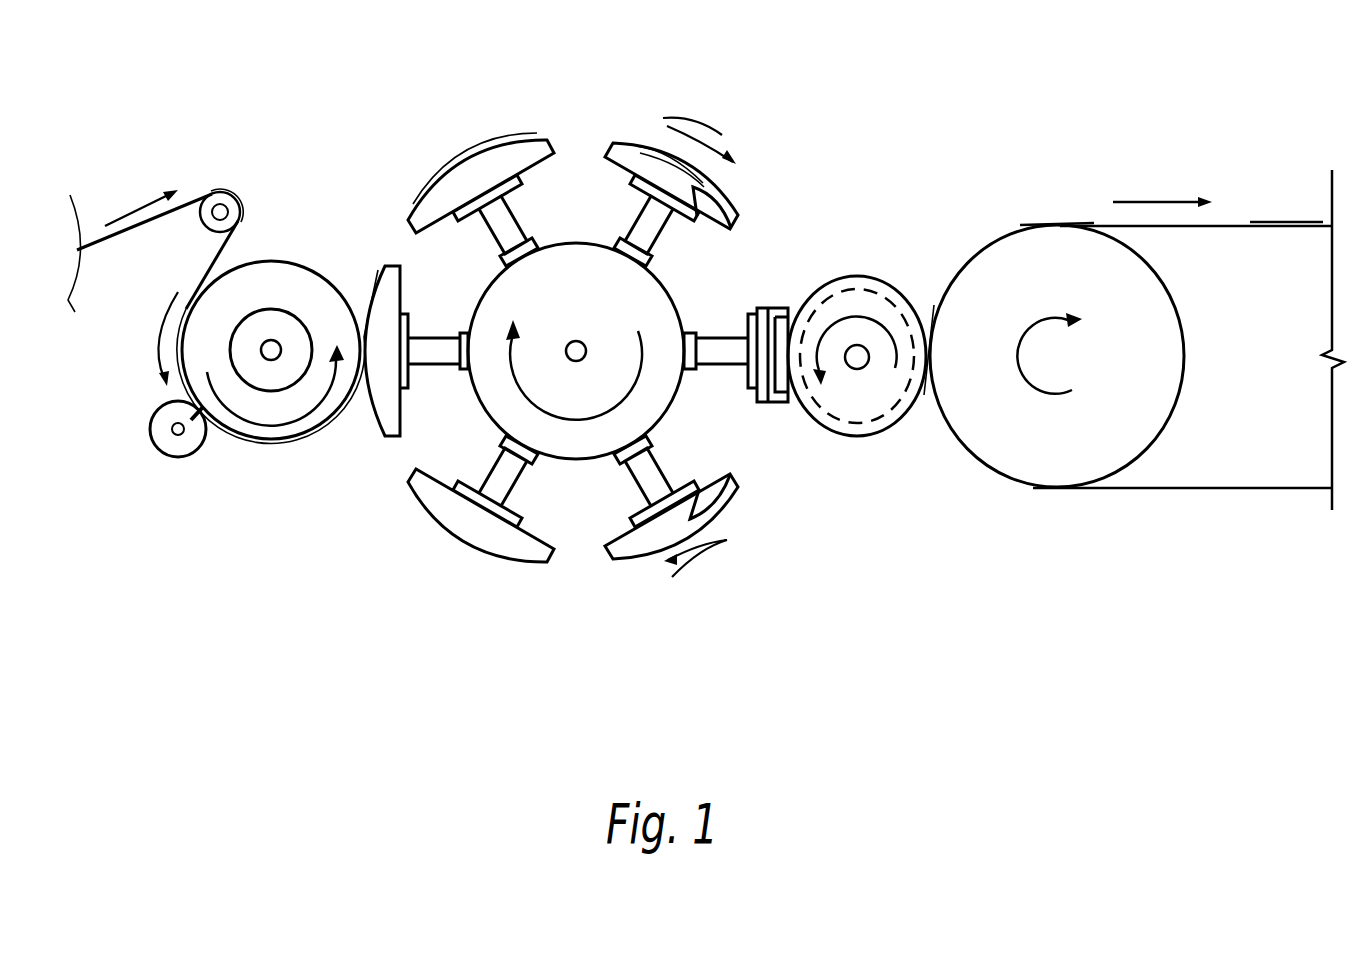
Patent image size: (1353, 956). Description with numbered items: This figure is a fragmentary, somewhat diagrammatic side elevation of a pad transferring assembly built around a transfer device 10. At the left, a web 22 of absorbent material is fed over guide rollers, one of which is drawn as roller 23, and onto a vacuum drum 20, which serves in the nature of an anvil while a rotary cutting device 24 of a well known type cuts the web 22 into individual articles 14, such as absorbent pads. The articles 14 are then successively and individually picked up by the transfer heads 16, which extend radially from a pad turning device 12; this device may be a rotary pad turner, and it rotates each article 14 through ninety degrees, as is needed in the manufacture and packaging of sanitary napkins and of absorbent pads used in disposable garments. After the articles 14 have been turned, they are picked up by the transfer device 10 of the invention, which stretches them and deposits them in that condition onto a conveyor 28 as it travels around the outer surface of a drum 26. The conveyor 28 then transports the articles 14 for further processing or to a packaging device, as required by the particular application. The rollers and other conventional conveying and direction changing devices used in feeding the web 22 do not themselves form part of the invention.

The transfer device 10 is at (873, 210).
The pad turning device 12 is at (560, 311).
The articles 14 is at (277, 443).
The transfer heads 16 is at (383, 405).
The vacuum drum 20 is at (280, 283).
The web 22 is at (207, 272).
The guide roller 23 is at (227, 197).
The rotary cutting device 24 is at (165, 430).
The drum 26 is at (1125, 374).
The conveyor 28 is at (1175, 230).